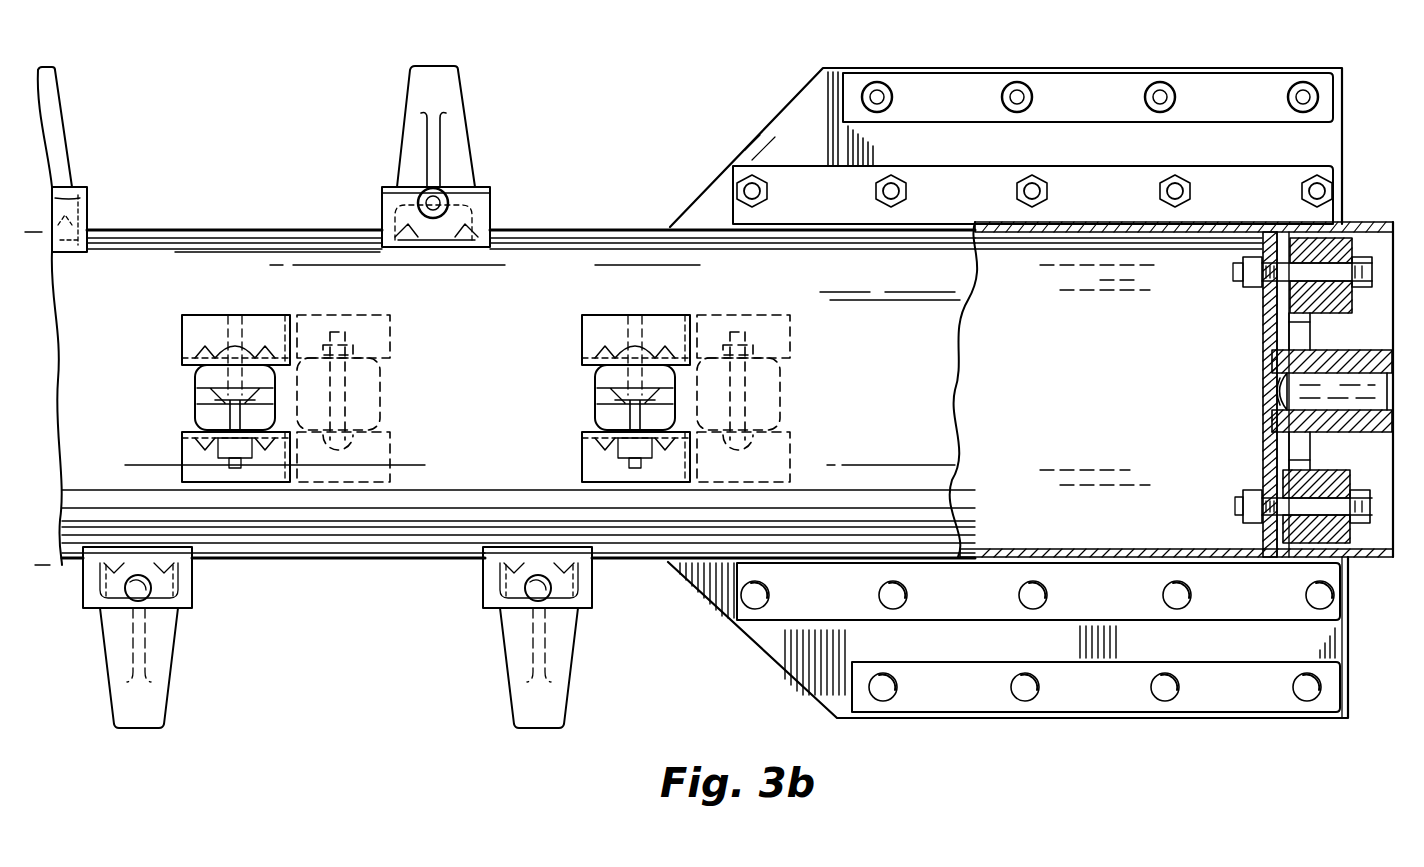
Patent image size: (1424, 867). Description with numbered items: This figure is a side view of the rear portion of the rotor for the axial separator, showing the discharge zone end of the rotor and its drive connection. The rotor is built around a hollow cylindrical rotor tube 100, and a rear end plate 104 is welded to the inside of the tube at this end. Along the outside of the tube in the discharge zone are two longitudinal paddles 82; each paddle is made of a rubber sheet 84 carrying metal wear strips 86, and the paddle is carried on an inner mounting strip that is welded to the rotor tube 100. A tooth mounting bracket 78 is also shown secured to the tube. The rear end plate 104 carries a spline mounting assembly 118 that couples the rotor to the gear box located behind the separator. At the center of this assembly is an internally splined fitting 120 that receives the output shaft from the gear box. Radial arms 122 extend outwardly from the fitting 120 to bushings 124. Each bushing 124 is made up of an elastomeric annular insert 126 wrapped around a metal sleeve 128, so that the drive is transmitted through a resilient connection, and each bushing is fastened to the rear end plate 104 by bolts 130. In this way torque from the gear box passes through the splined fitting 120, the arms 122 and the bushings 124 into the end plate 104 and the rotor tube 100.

The mounting bracket 78 is at (442, 80).
The longitudinal paddle 82 is at (1006, 147).
The rubber sheet 84 is at (831, 149).
The metal wear strips 86 is at (957, 107).
The rotor tube 100 is at (565, 294).
The rear end plate 104 is at (1268, 338).
The spline mounting assembly 118 is at (1183, 394).
The internally splined fitting 120 is at (1380, 424).
The radial arms 122 is at (1303, 322).
The bushing 124 is at (1290, 548).
The elastomeric annular insert 126 is at (1360, 526).
The metal sleeve 128 is at (1273, 528).
The bolts 130 is at (1237, 507).